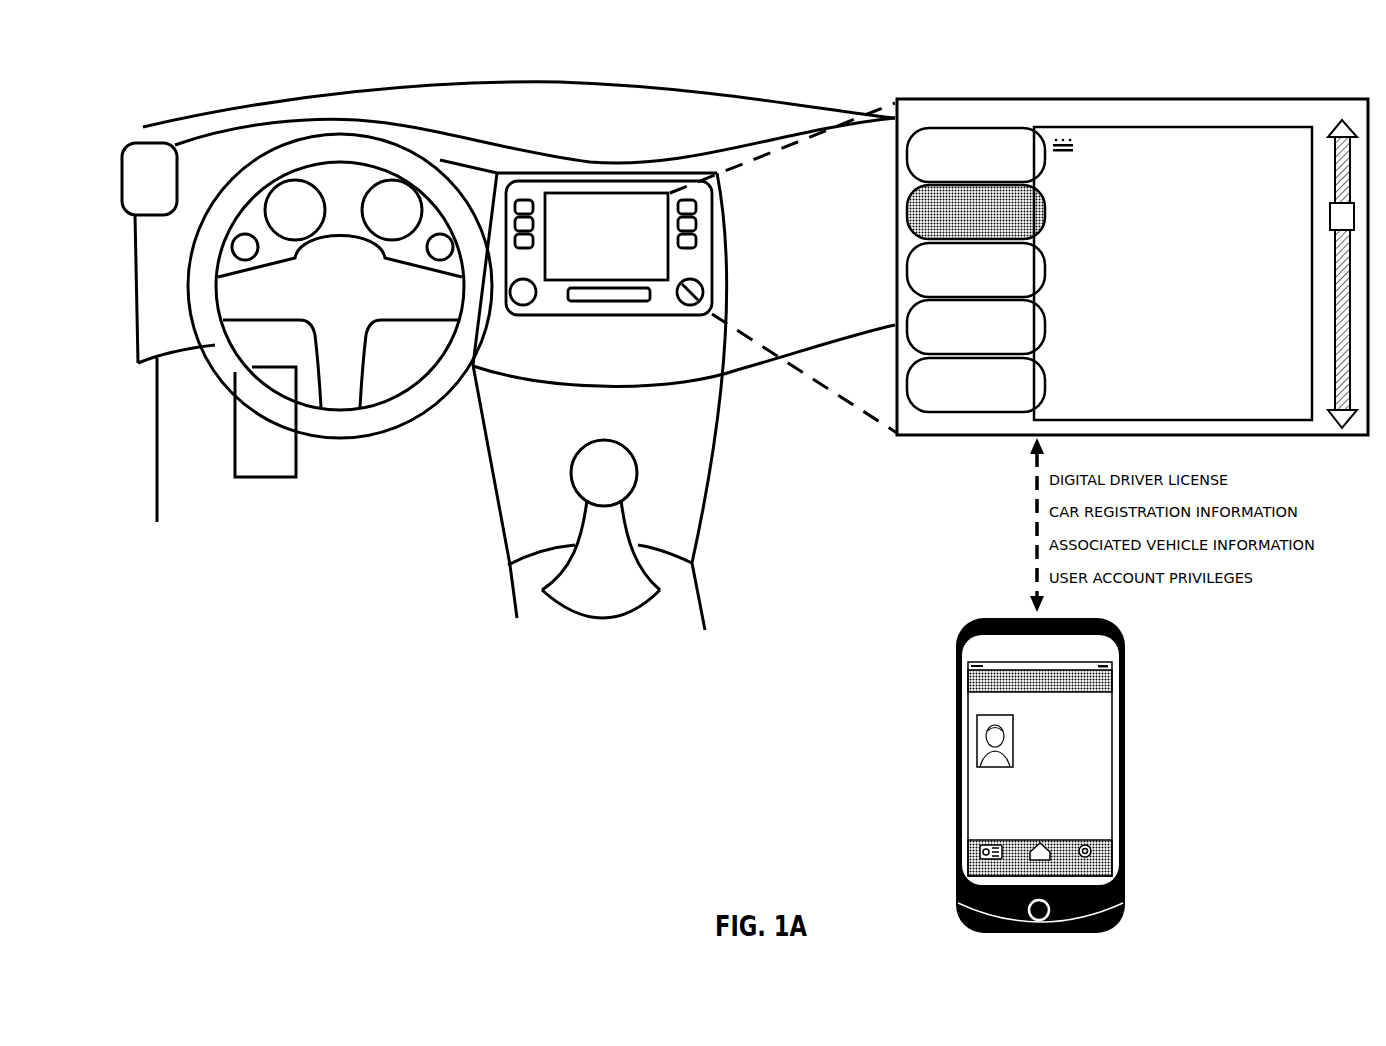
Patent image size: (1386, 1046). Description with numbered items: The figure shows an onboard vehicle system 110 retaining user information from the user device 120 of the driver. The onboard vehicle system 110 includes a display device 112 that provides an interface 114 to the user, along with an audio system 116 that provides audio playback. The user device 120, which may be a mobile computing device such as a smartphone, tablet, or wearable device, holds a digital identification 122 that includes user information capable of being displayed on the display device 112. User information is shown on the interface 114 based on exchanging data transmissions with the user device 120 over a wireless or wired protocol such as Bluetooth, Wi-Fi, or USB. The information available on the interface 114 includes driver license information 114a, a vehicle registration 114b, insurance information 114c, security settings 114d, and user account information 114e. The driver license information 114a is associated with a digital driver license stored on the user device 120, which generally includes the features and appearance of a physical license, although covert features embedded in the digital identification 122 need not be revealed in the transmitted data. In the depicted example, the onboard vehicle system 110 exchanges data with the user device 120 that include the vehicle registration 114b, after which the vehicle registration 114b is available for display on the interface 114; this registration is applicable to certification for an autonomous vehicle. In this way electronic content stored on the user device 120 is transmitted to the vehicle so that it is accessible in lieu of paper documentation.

The onboard vehicle system 110 is at (485, 83).
The display device 112 is at (612, 183).
The interface 114 is at (1149, 99).
The driver license information 114a is at (907, 156).
The vehicle registration 114b is at (907, 213).
The insurance information 114c is at (907, 270).
The security settings 114d is at (907, 327).
The user account information 114e is at (907, 385).
The audio system 116 is at (140, 143).
The user device 120 is at (955, 637).
The digital identification 122 is at (972, 730).